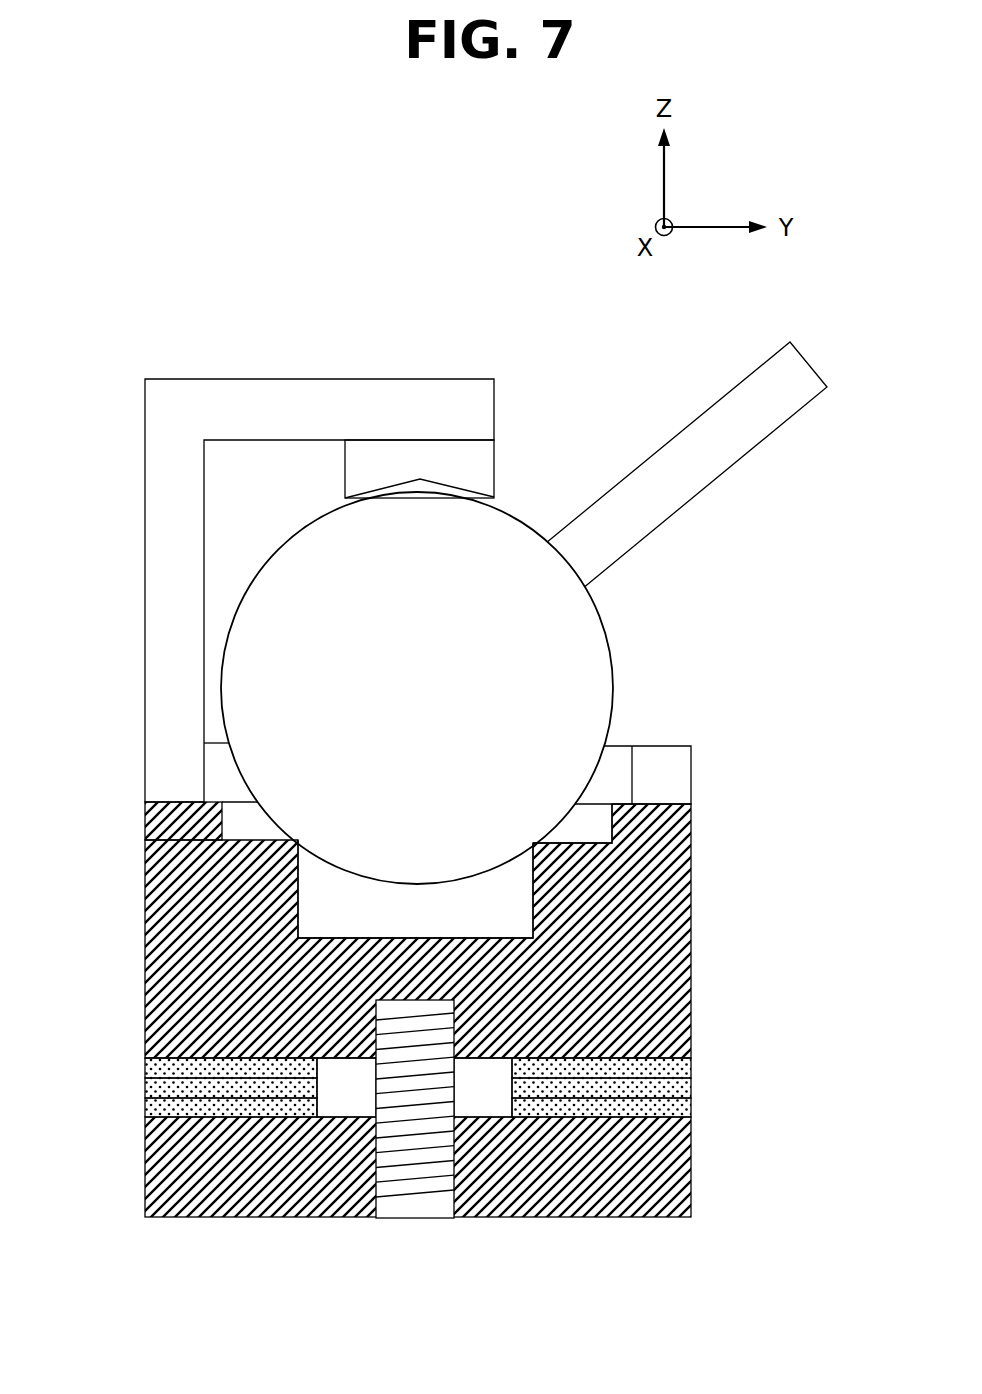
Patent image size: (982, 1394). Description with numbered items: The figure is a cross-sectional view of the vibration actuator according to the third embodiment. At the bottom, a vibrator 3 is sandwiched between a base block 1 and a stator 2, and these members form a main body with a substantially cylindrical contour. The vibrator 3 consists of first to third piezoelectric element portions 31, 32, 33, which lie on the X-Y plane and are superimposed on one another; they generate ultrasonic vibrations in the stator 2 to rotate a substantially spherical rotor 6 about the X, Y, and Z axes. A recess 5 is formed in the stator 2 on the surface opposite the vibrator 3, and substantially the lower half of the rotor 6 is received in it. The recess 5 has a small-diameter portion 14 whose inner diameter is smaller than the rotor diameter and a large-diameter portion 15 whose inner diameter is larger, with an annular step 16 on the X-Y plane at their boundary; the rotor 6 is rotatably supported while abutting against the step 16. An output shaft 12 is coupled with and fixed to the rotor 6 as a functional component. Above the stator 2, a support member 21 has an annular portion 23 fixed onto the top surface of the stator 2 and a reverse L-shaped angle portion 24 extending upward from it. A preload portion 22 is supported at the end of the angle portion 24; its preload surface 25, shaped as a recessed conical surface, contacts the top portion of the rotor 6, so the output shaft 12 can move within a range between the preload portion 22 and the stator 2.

The base block 1 is at (145, 1177).
The stator 2 is at (691, 905).
The vibrator 3 is at (413, 1084).
The recess 5 is at (513, 917).
The rotor 6 is at (612, 658).
The output shaft 12 is at (713, 485).
The small-diameter portion 14 is at (298, 888).
The large-diameter portion 15 is at (240, 831).
The annular step 16 is at (533, 843).
The support member 21 is at (404, 591).
The preload portion 22 is at (494, 477).
The annular portion 23 is at (691, 772).
The angle portion 24 is at (145, 430).
The preload surface 25 is at (421, 483).
The first piezoelectric element portion 31 is at (145, 1066).
The second piezoelectric element portion 32 is at (145, 1088).
The third piezoelectric element portion 33 is at (145, 1108).